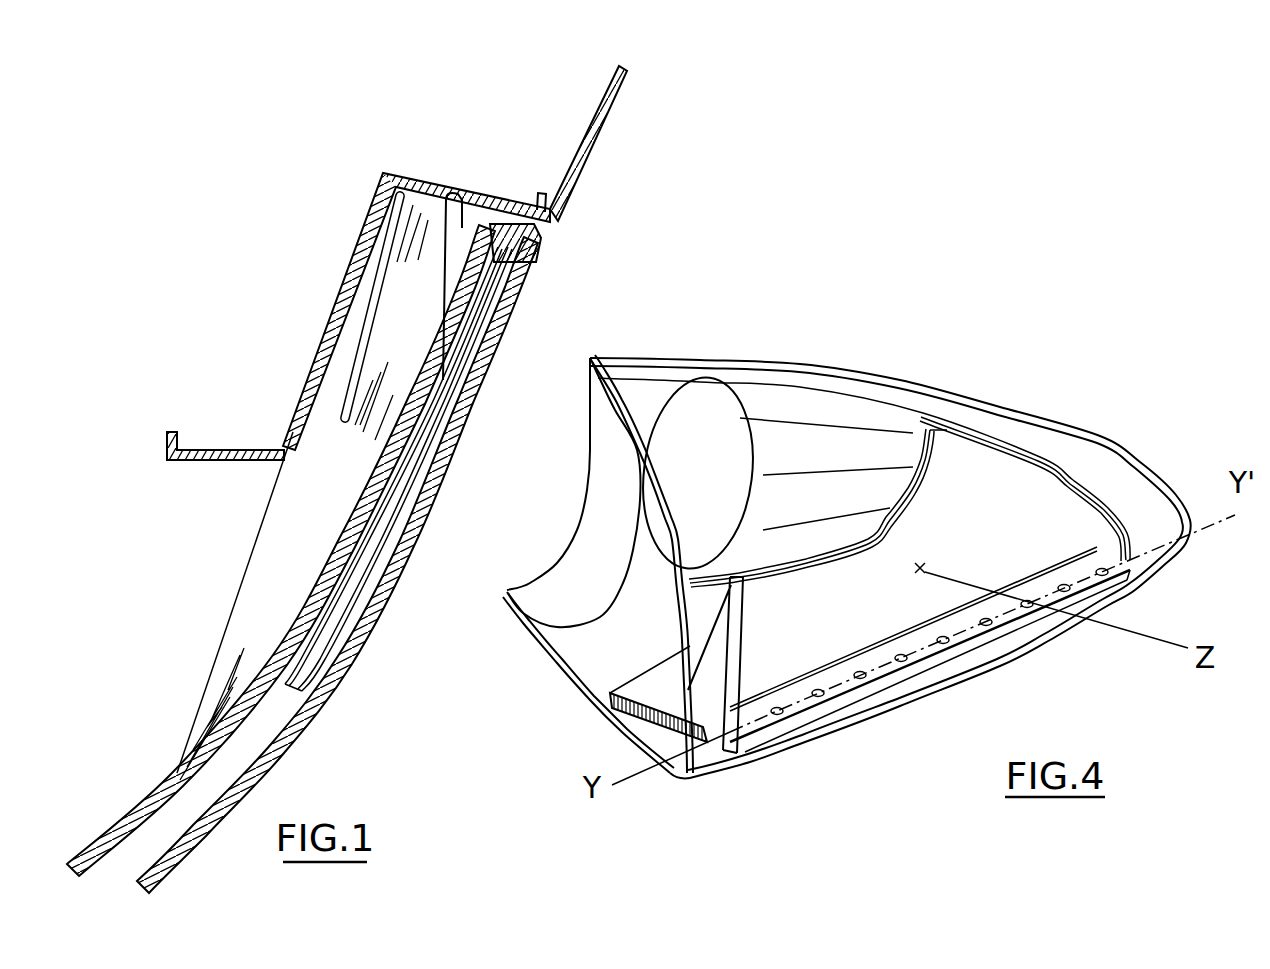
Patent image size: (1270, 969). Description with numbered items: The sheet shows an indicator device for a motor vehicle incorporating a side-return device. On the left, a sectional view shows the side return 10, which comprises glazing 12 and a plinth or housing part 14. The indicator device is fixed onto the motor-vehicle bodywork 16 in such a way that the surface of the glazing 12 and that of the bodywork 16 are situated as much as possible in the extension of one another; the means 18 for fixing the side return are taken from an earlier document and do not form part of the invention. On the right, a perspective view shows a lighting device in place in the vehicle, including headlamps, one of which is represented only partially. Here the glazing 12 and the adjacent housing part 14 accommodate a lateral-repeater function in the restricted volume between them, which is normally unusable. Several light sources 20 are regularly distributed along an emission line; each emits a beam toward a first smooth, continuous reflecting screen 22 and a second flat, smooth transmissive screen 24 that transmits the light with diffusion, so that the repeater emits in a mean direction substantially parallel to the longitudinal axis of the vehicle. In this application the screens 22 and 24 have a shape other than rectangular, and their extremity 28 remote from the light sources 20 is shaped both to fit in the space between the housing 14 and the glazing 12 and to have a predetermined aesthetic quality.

In FIG. 1, the side return 10 is at (548, 286).
In FIG. 1, the glazing 12 is at (280, 748).
In FIG. 4, the glazing 12 is at (590, 668).
In FIG. 1, the plinth or housing part 14 is at (343, 543).
In FIG. 4, the plinth or housing part 14 is at (840, 453).
In FIG. 1, the bodywork 16 is at (584, 152).
In FIG. 1, the fixing means 18 is at (327, 428).
In FIG. 1, the light source 20 is at (471, 246).
In FIG. 4, the light source 20 is at (946, 645).
In FIG. 1, the first screen 22 is at (377, 494).
In FIG. 4, the first screen 22 is at (690, 692).
In FIG. 1, the second screen 24 is at (430, 408).
In FIG. 4, the second screen 24 is at (750, 662).
In FIG. 4, the extremity of the screens 28 is at (1000, 467).